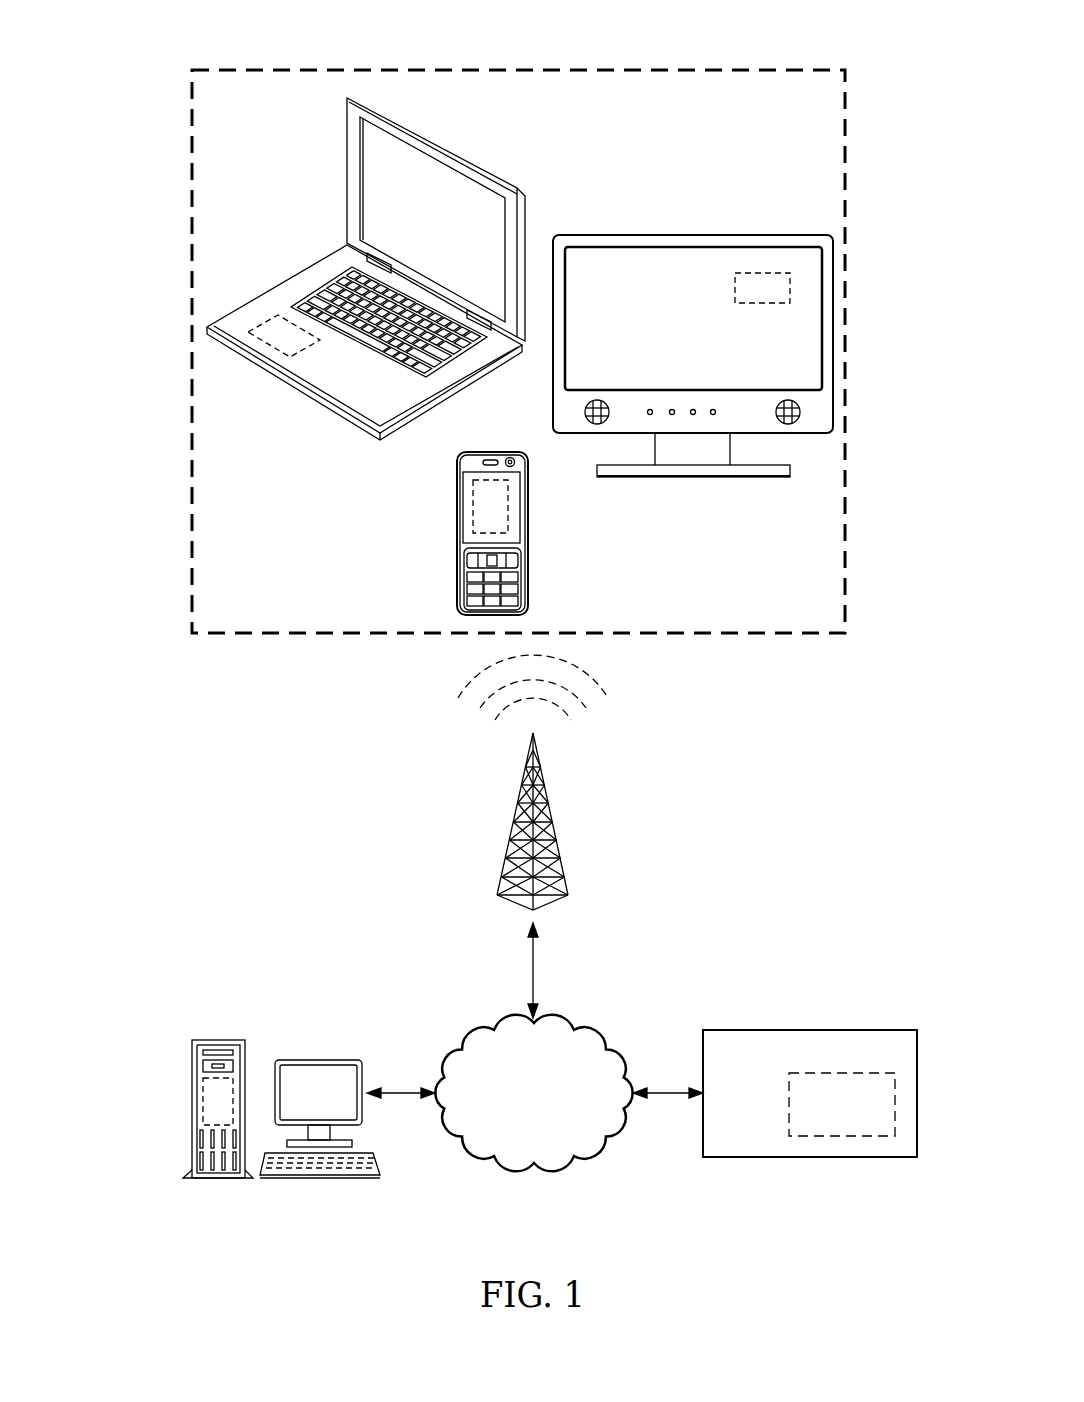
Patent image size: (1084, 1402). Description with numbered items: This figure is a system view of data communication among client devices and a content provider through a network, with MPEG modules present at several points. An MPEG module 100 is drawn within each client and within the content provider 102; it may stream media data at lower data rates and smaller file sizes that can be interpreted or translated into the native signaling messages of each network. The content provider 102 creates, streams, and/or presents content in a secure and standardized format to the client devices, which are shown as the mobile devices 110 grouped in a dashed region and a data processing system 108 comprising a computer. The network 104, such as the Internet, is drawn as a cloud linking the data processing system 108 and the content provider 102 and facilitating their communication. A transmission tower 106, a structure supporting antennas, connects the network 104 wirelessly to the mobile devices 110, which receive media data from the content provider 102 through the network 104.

The MPEG-4 module 100 is at (310, 348).
The content provider 102 is at (808, 1157).
The network 104 is at (507, 1172).
The transmission tower 106 is at (503, 852).
The data processing system 108 is at (253, 1206).
The mobile devices 110 is at (654, 60).